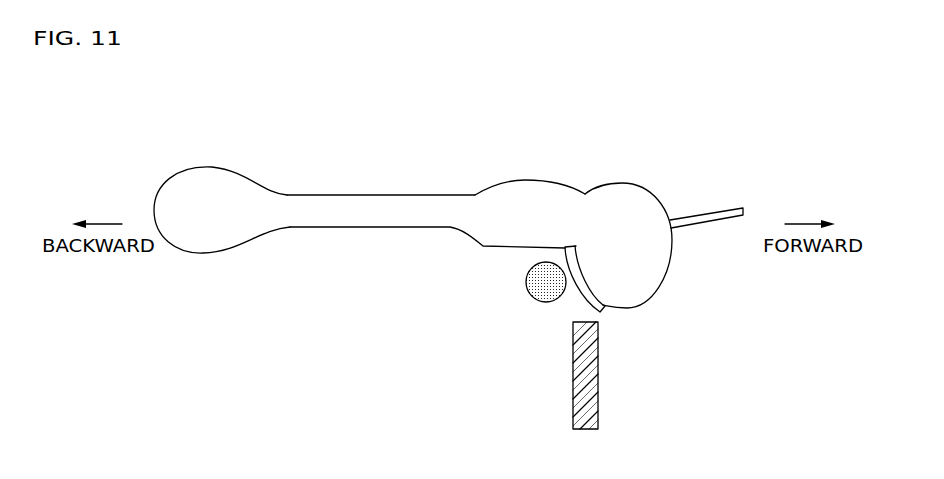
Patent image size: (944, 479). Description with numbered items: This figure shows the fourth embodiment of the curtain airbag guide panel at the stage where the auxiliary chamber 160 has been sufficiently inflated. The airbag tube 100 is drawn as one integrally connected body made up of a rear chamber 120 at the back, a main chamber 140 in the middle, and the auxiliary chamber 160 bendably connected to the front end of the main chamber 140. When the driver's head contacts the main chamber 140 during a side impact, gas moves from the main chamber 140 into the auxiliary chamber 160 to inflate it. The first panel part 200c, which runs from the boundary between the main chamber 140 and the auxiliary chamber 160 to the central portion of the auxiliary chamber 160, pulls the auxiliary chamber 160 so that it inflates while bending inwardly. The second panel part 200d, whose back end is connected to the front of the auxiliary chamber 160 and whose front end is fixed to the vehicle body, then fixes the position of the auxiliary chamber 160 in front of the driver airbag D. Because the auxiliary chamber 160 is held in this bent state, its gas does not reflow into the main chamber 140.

The airbag tube 100 is at (360, 173).
The rear chamber 120 is at (212, 244).
The main chamber 140 is at (517, 194).
The auxiliary chamber 160 is at (620, 198).
The first panel part 200c is at (606, 309).
The second panel part 200d is at (708, 210).
The driver airbag D is at (590, 408).